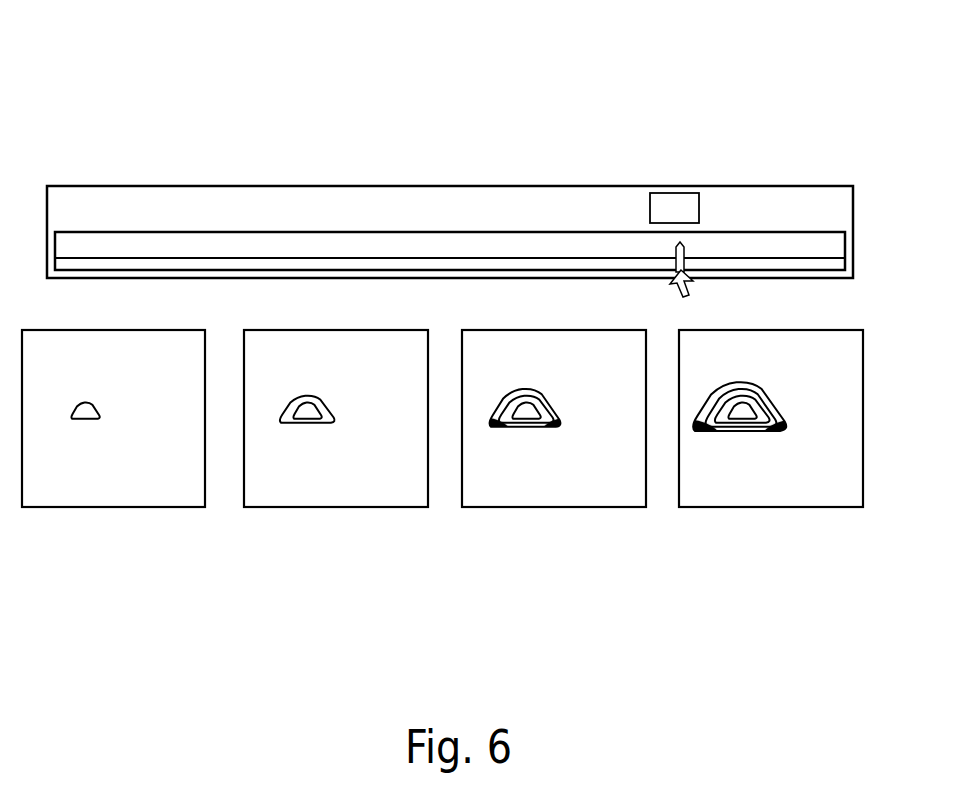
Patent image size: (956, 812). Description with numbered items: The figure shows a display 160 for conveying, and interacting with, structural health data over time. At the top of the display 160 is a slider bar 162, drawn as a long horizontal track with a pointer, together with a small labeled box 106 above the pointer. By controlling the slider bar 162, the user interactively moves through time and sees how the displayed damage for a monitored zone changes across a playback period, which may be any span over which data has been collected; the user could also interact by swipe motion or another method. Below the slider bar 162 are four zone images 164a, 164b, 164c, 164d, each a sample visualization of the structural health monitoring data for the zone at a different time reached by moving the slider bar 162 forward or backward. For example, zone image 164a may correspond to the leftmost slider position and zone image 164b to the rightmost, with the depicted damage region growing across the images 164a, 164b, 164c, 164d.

The display 160 is at (442, 327).
The slider bar 162 is at (226, 182).
The frame indicator 106 is at (674, 208).
The zone image 164a is at (125, 512).
The zone image 164b is at (347, 512).
The zone image 164c is at (557, 512).
The zone image 164d is at (777, 512).